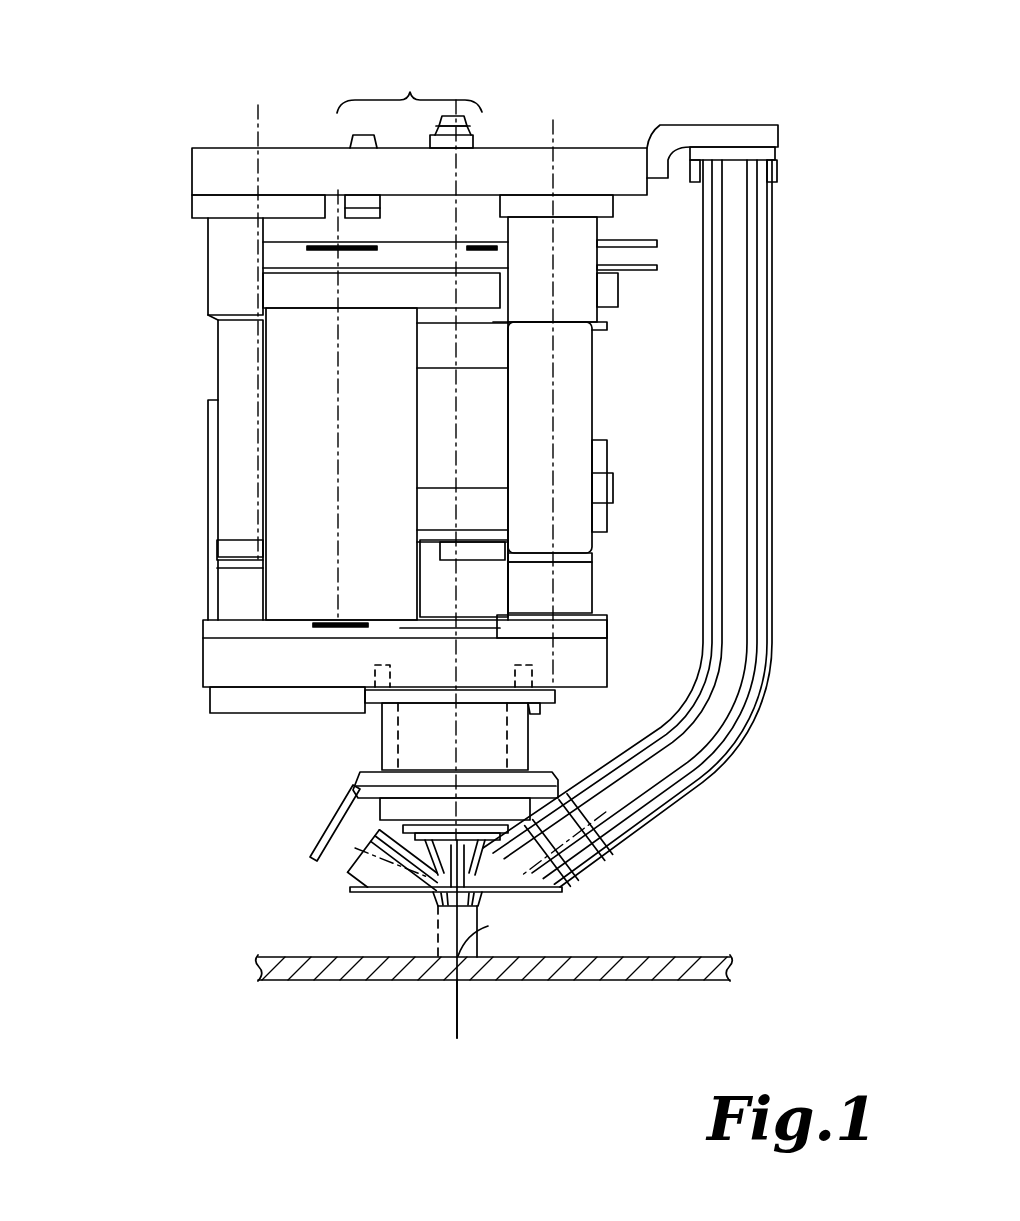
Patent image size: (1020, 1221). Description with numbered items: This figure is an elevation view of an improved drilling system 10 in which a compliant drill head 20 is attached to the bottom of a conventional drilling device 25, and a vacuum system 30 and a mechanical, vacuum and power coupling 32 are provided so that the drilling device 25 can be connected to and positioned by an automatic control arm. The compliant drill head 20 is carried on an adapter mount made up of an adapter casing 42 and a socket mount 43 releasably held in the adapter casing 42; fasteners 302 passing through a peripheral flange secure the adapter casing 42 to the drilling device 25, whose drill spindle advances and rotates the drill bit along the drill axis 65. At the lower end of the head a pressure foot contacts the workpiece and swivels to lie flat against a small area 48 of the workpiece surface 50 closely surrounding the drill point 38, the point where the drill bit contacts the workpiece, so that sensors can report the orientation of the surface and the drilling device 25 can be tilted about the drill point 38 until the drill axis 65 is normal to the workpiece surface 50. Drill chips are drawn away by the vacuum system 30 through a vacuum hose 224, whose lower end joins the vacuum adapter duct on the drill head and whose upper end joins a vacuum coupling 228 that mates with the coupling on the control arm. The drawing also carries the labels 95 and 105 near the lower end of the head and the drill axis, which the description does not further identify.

The drilling system 10 is at (758, 107).
The vacuum coupling 228 is at (790, 132).
The mechanical, vacuum and power coupling 32 is at (409, 103).
The drilling device 25 is at (145, 458).
The vacuum hose 224 is at (768, 657).
The fasteners 302 is at (538, 714).
The adapter casing 42 is at (380, 752).
The compliant drill head 20 is at (240, 830).
The socket mount 43 is at (380, 810).
The vacuum system 30 is at (590, 876).
The shroud 95 is at (352, 894).
The small area 48 is at (437, 948).
The drill point 38 is at (483, 947).
The workpiece surface 50 is at (665, 957).
The drill axis 65 is at (458, 1025).
The fluid path 105 is at (539, 1022).